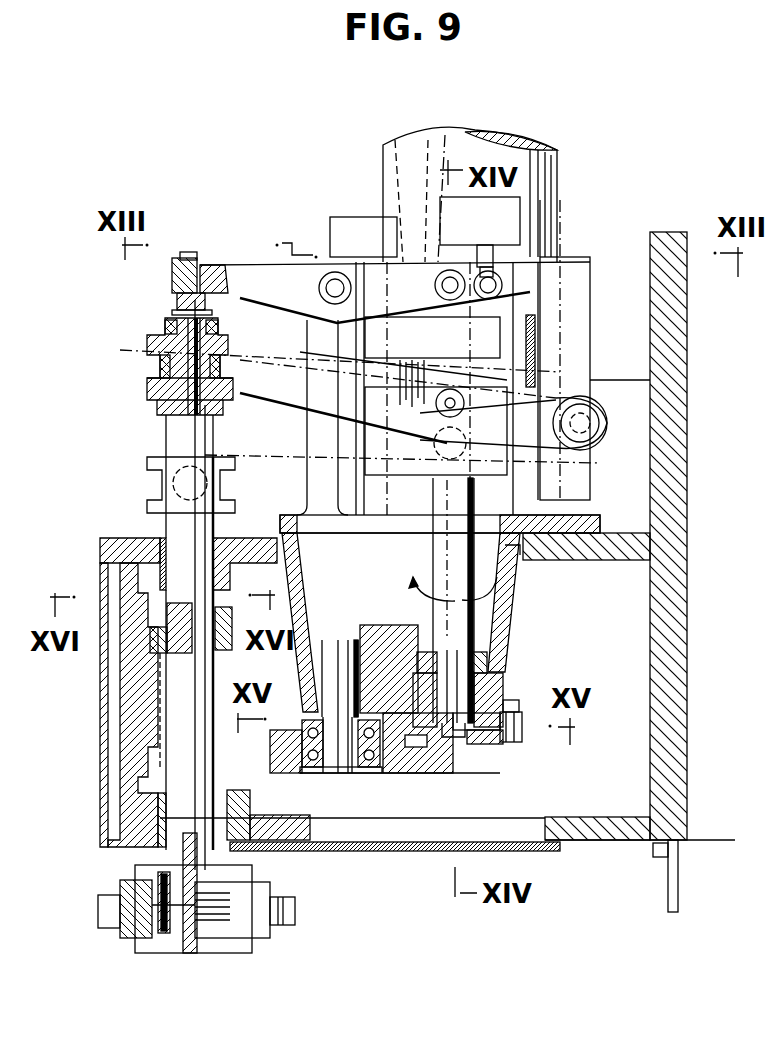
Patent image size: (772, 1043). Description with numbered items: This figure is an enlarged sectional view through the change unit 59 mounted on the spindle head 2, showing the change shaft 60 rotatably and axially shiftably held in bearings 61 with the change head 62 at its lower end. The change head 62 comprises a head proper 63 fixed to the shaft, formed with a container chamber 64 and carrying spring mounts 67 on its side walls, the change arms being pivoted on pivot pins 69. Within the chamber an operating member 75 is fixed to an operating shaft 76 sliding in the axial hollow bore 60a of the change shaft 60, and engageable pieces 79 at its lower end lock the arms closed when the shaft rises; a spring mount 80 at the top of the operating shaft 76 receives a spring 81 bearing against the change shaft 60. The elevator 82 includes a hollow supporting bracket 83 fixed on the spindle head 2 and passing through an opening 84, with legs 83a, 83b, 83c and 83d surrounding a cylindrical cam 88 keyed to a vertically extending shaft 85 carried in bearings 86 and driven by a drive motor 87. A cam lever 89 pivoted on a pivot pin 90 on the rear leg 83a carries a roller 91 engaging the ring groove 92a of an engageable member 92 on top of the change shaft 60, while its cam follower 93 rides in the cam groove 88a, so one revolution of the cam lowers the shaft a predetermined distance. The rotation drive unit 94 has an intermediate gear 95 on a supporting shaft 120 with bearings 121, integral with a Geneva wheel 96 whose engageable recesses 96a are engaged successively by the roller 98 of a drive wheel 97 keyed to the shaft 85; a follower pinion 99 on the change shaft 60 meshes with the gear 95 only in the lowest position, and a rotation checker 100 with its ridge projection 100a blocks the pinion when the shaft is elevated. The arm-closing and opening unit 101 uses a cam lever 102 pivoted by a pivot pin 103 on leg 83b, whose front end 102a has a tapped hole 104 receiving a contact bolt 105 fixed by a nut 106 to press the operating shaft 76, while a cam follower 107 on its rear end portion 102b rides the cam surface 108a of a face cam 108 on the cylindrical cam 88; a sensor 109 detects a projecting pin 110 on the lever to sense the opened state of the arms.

The spindle head 2 is at (112, 537).
The change unit 59 is at (113, 275).
The change shaft 60 is at (180, 445).
The axial hollow bore 60a is at (190, 400).
The bearings 61 is at (147, 537).
The change head 62 is at (118, 950).
The head proper 63 is at (127, 918).
The container chamber 64 is at (125, 893).
The spring mount 67 is at (102, 909).
The pivot pins 69 is at (160, 940).
The operating member 75 is at (190, 953).
The operating shaft 76 is at (167, 363).
The engageable pieces 79 is at (155, 957).
The spring mount 80 is at (172, 307).
The spring 81 is at (173, 313).
The elevator 82 is at (607, 420).
The hollow supporting bracket 83 is at (515, 610).
The rear leg 83a is at (592, 386).
The leg 83b is at (317, 338).
The leg 83c is at (537, 295).
The leg 83d is at (363, 237).
The opening 84 is at (521, 552).
The vertically extending shaft 85 is at (540, 510).
The bearings 86 is at (490, 663).
The drive motor 87 is at (548, 165).
The cylindrical cam 88 is at (540, 327).
The cam groove 88a is at (540, 380).
The cam lever 89 is at (540, 357).
The pivot pin 90 is at (590, 425).
The roller 91 is at (120, 350).
The engageable member 92 is at (162, 395).
The ring groove 92a is at (167, 373).
The cam follower 93 is at (430, 383).
The rotation drive unit 94 is at (330, 777).
The intermediate gear 95 is at (432, 777).
The Geneva wheel 96 is at (392, 742).
The engageable recesses 96a is at (427, 763).
The drive wheel 97 is at (492, 733).
The roller 98 is at (521, 738).
The follower pinion 99 is at (228, 617).
The rotation checker 100 is at (130, 685).
The ridge projection 100a is at (160, 717).
The arm-closing and opening unit 101 is at (408, 262).
The cam lever 102 is at (302, 262).
The front end 102a is at (207, 267).
The rear end portion 102b is at (480, 237).
The pivot pin 103 is at (330, 273).
The tapped hole 104 is at (182, 262).
The contact bolt 105 is at (177, 298).
The nut 106 is at (187, 253).
The cam follower 107 is at (462, 185).
The face cam 108 is at (540, 256).
The cam surface 108a is at (400, 258).
The sensor 109 is at (513, 200).
The projecting pin 110 is at (495, 268).
The supporting shaft 120 is at (352, 755).
The bearings 121 is at (318, 765).